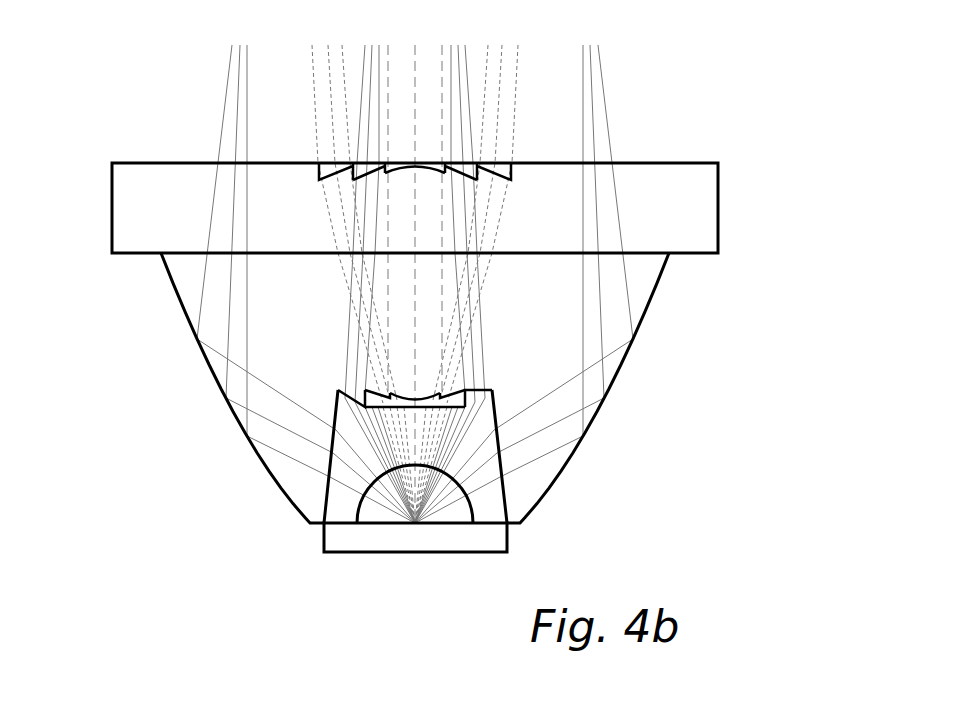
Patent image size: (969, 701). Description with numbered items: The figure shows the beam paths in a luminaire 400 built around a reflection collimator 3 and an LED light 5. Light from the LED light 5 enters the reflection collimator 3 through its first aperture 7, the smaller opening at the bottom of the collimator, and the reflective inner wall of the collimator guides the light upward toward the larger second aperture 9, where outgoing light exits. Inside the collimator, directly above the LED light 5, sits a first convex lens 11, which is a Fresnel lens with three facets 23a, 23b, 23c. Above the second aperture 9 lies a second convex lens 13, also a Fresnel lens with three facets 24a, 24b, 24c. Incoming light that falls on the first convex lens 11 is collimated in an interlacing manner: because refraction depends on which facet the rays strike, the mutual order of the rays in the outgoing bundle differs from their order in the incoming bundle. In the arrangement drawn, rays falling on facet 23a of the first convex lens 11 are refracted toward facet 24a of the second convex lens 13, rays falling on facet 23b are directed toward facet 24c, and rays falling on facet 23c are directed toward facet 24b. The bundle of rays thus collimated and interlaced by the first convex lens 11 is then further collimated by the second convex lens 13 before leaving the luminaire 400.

The luminaire 400 is at (737, 82).
The second convex lens 13 is at (428, 180).
The facet of the second convex lens 24a is at (435, 170).
The facet of the second convex lens 24b is at (447, 166).
The facet of the second convex lens 24c is at (482, 166).
The second aperture 9 is at (294, 255).
The reflection collimator 3 is at (622, 373).
The first convex lens 11 is at (419, 416).
The facet of the first convex lens 23a is at (403, 397).
The facet of the first convex lens 23b is at (388, 397).
The facet of the first convex lens 23c is at (348, 395).
The first aperture 7 is at (325, 520).
The LED light 5 is at (323, 535).